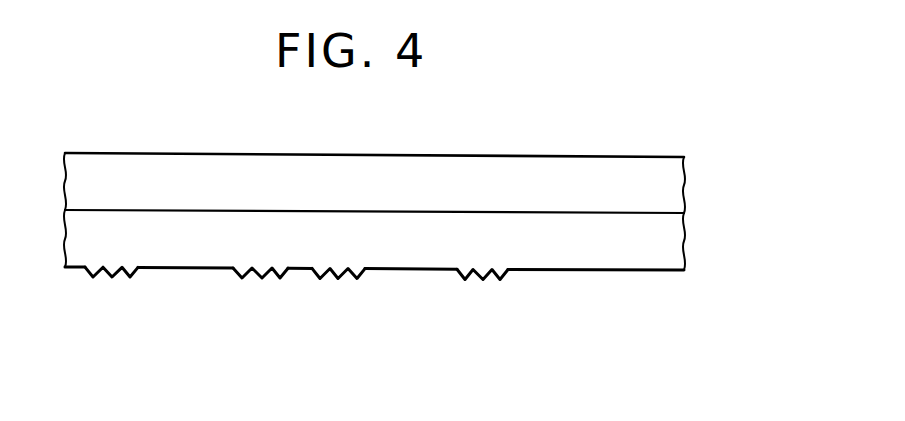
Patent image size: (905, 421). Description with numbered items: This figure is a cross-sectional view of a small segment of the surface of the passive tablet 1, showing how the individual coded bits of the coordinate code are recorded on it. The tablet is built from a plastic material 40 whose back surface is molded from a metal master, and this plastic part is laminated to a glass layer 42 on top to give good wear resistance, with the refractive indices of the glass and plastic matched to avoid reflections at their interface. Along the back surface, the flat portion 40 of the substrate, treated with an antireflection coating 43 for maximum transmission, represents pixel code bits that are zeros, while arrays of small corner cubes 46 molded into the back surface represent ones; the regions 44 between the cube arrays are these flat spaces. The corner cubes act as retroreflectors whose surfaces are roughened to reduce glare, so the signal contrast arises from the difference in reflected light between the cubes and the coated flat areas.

The passive tablet 1 is at (410, 228).
The flat portion of the tablet substrate 40 is at (658, 253).
The glass layer 42 is at (665, 192).
The antireflection coating 43 is at (443, 286).
The land portions 44 is at (167, 268).
The corner cubes 46 is at (110, 267).